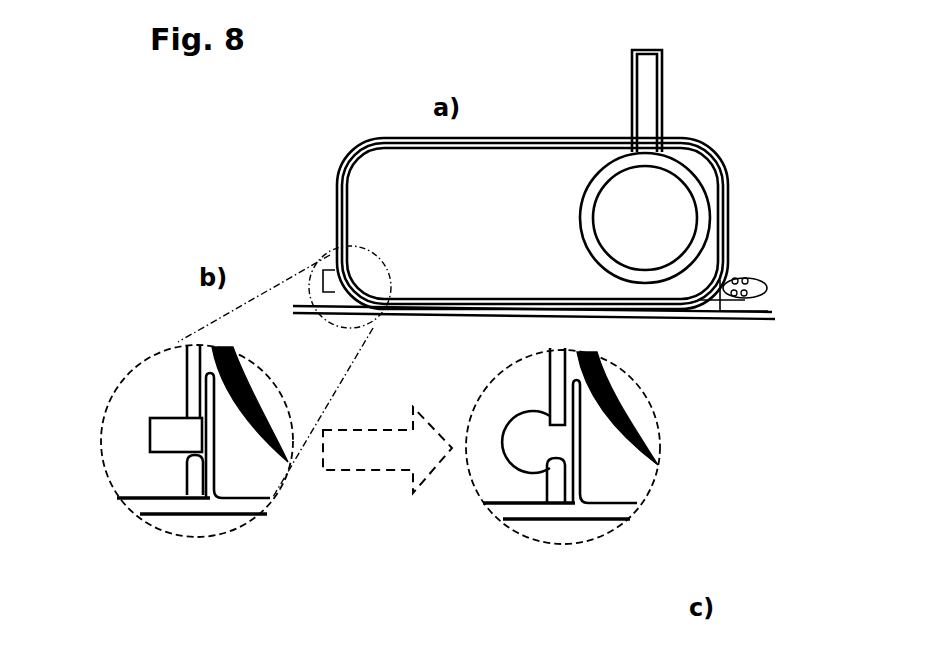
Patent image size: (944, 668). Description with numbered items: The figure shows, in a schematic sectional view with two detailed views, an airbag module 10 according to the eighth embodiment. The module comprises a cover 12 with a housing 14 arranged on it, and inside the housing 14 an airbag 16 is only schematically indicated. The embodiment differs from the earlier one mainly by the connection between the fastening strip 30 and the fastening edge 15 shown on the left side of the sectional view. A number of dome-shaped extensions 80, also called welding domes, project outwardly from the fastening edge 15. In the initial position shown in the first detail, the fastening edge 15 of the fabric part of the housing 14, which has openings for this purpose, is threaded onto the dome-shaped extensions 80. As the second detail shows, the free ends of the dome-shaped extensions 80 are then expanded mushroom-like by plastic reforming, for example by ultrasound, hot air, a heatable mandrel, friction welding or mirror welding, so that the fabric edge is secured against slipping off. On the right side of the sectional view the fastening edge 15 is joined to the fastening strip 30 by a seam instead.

The airbag module 10 is at (717, 158).
The cover 12 is at (679, 322).
The housing 14 is at (357, 153).
The fastening edge 15 is at (182, 499).
The airbag 16 is at (760, 289).
The fastening strip 30 is at (212, 470).
The dome-shaped extensions 80 is at (178, 438).